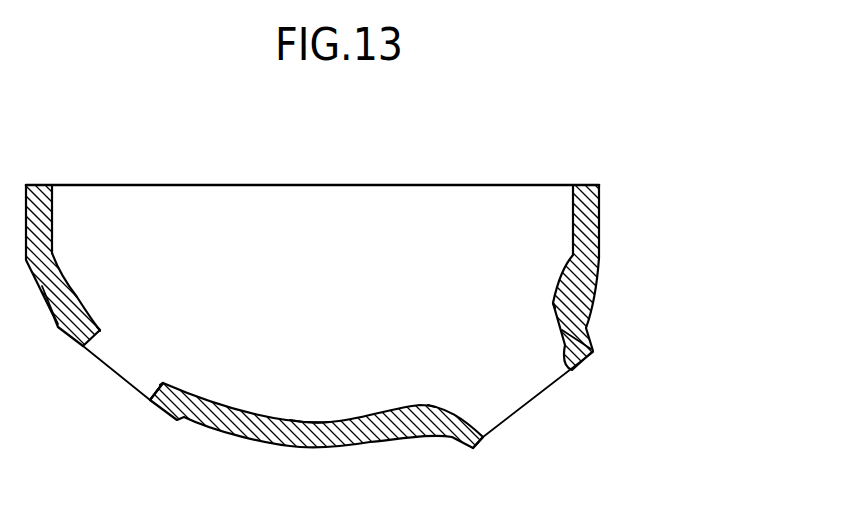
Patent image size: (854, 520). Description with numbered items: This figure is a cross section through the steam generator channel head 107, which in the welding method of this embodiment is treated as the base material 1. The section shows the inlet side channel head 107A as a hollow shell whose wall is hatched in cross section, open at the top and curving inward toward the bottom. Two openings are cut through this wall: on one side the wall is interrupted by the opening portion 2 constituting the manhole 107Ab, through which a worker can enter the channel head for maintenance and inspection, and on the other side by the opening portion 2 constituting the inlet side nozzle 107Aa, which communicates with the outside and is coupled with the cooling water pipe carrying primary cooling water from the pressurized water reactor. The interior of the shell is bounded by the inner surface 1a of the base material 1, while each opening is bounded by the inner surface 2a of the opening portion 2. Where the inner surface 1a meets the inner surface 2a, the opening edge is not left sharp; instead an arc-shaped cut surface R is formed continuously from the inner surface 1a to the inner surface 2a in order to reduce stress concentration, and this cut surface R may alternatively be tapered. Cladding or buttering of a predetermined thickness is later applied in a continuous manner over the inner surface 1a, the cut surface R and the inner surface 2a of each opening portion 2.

The channel head 107 is at (427, 315).
The base material 1 is at (600, 210).
The inlet side channel head 107A is at (406, 224).
The opening portion 2 is at (427, 325).
The manhole 107Ab is at (150, 390).
The inlet side nozzle 107Aa is at (468, 417).
The inner surface of the opening portion 2a is at (100, 355).
The inner surface of the base material 1a is at (293, 420).
The cut surface R is at (104, 332).